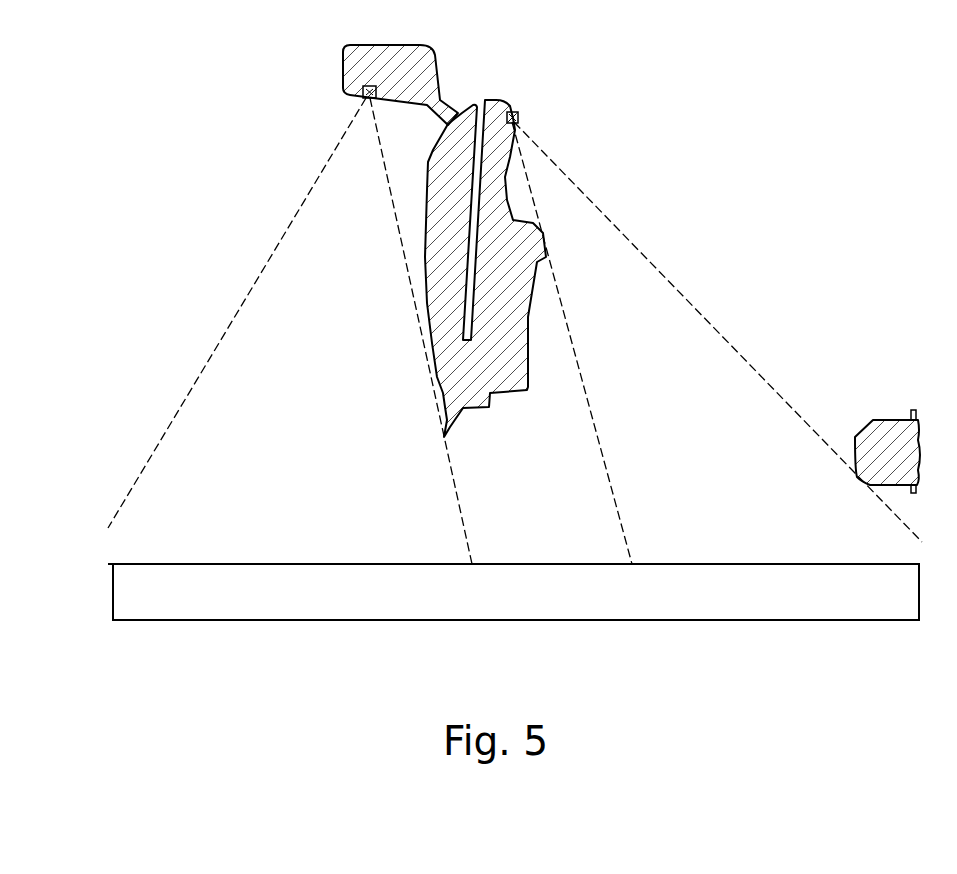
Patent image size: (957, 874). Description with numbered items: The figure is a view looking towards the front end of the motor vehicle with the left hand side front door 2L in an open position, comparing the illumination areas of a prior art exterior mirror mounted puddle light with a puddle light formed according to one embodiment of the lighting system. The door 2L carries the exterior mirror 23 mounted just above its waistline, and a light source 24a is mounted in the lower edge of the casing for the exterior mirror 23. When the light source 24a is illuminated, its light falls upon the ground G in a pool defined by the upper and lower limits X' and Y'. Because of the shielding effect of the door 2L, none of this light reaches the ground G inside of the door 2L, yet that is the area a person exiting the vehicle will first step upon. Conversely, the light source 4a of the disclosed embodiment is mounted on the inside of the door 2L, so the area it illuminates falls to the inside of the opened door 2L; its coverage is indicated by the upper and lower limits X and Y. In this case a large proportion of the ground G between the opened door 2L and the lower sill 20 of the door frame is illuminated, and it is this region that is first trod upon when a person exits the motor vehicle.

The lower sill 20 is at (888, 420).
The exterior mirror 23 is at (343, 56).
The light source 24a is at (363, 95).
The light source 4a is at (518, 118).
The left hand side front door 2L is at (490, 410).
The ground G is at (265, 563).
The upper limit X is at (718, 332).
The upper limit X' is at (237, 313).
The lower limit Y is at (591, 343).
The lower limit Y' is at (395, 331).